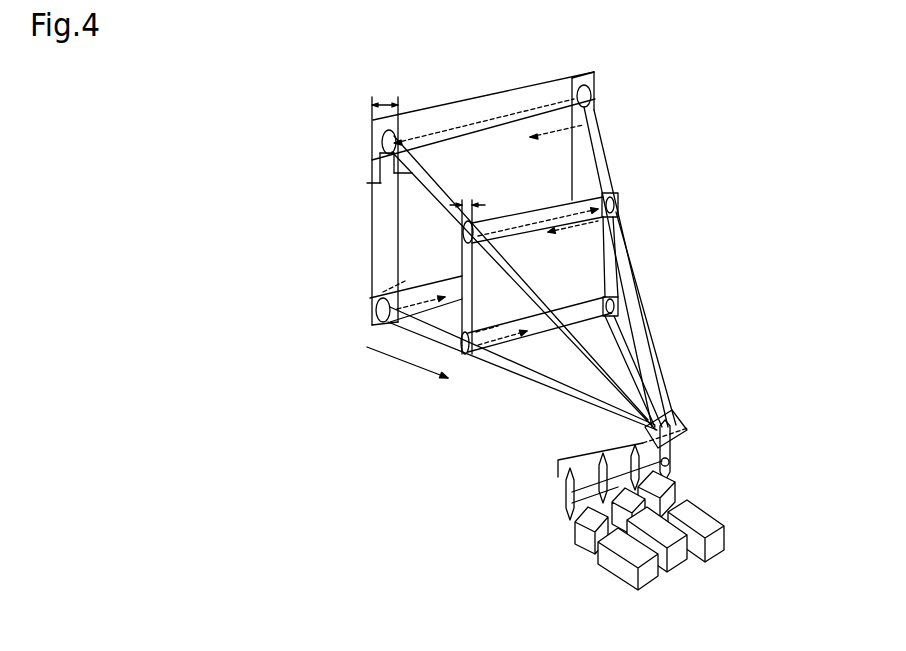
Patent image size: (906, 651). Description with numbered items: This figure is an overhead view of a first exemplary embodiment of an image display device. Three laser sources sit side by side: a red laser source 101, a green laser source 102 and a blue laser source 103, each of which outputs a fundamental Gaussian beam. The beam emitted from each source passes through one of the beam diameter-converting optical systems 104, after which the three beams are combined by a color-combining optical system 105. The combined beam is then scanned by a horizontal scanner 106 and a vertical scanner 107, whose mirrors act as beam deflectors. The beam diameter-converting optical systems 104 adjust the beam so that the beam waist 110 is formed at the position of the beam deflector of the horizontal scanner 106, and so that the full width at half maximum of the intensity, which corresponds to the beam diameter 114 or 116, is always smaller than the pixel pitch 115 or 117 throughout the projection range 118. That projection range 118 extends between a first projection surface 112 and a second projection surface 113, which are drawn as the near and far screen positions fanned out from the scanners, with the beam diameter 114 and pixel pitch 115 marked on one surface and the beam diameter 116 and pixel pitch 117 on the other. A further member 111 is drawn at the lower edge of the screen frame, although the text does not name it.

The red laser source 101 is at (630, 574).
The green laser source 102 is at (656, 585).
The blue laser source 103 is at (690, 568).
The beam diameter-converting optical system 104 is at (670, 488).
The color-combining optical system 105 is at (570, 438).
The horizontal scanner 106 is at (671, 461).
The vertical scanner 107 is at (688, 428).
The beam waist 110 is at (686, 500).
The lower movable member 111 is at (642, 311).
The first projection surface 112 is at (618, 212).
The second projection surface 113 is at (598, 111).
The beam diameter 114 is at (452, 246).
The pixel pitch 115 is at (467, 261).
The beam diameter 116 is at (370, 190).
The pixel pitch 117 is at (355, 88).
The projection range 118 is at (410, 364).